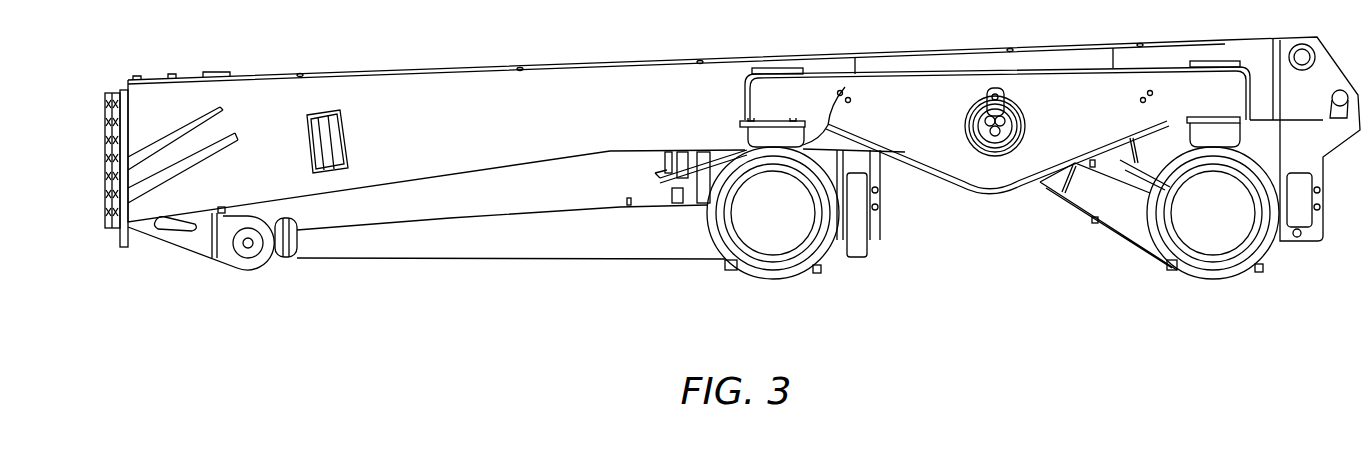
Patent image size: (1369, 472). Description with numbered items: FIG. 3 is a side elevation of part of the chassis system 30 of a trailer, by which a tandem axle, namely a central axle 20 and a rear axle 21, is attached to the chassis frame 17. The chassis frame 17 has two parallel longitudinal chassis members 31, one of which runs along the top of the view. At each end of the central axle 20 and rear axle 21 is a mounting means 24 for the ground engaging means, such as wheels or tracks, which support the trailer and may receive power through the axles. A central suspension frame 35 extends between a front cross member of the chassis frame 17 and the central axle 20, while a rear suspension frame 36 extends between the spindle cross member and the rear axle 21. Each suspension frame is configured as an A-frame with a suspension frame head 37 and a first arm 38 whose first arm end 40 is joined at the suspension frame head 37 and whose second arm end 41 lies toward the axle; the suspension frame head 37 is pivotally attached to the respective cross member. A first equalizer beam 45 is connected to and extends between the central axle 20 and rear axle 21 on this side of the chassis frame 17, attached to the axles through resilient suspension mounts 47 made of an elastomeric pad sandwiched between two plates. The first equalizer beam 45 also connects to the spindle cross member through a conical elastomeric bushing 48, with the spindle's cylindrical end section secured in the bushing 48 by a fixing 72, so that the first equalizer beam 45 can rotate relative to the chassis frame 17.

The chassis frame 17 is at (160, 70).
The longitudinal chassis member 31 is at (390, 107).
The central suspension frame 35 is at (265, 278).
The suspension frame head 37 is at (290, 258).
The first arm end 40 is at (358, 218).
The chassis system 30 is at (426, 293).
The first arm 38 is at (527, 248).
The second arm end 41 is at (700, 250).
The mounting means 24 is at (772, 222).
The central axle 20 is at (838, 268).
The rear axle 21 is at (1282, 266).
The first equalizer beam 45 is at (1055, 80).
The suspension mount 47 is at (852, 92).
The bushing 48 is at (973, 150).
The fixing 72 is at (1007, 152).
The rear suspension frame 36 is at (1052, 220).